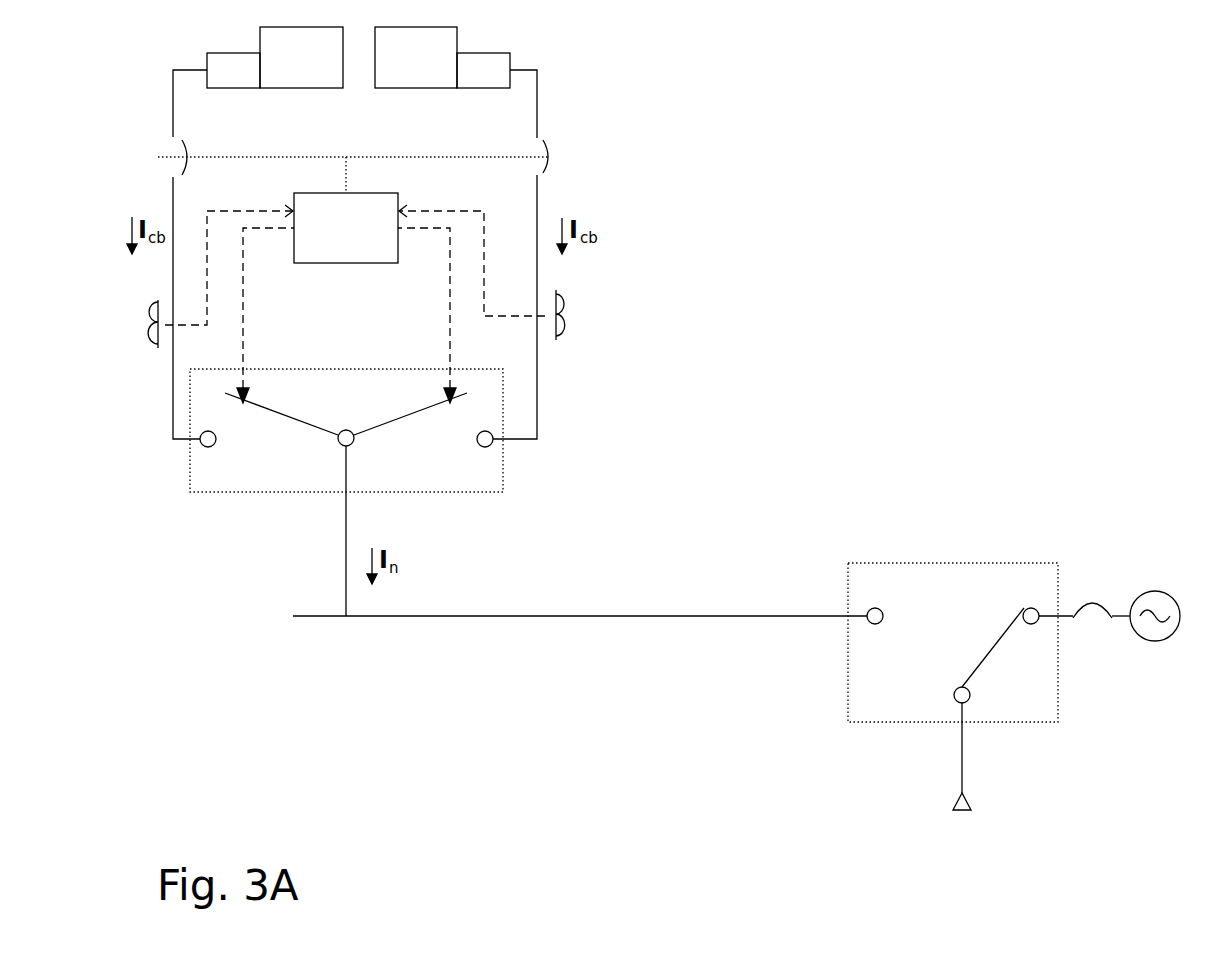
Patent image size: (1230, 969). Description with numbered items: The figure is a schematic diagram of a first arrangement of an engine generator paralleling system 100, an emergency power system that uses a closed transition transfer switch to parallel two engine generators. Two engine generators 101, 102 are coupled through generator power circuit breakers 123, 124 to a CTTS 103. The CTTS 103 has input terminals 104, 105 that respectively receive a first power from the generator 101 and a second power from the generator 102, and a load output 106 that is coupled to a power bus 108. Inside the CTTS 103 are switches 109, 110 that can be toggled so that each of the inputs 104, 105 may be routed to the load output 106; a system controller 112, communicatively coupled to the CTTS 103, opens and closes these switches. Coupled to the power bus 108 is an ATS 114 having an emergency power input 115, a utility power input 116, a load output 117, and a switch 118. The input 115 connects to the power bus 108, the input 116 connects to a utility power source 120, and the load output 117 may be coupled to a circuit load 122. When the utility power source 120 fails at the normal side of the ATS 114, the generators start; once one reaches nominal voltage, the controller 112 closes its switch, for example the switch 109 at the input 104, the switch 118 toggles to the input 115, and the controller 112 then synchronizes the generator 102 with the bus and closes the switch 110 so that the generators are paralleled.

The engine generator paralleling system 100 is at (920, 102).
The engine generator 101 is at (275, 57).
The engine generator 102 is at (442, 57).
The CTTS 103 is at (346, 430).
The input terminal 104 is at (208, 448).
The input terminal 105 is at (485, 448).
The load output 106 is at (352, 447).
The power bus 108 is at (598, 617).
The switch 109 is at (262, 409).
The switch 110 is at (403, 421).
The system controller 112 is at (355, 298).
The ATS 114 is at (953, 642).
The emergency power input 115 is at (882, 622).
The utility power input 116 is at (1040, 620).
The load output 117 is at (970, 692).
The switch 118 is at (970, 675).
The utility power source 120 is at (1142, 640).
The circuit load 122 is at (964, 773).
The generator power circuit breaker 123 is at (178, 145).
The generator power circuit breaker 124 is at (553, 170).